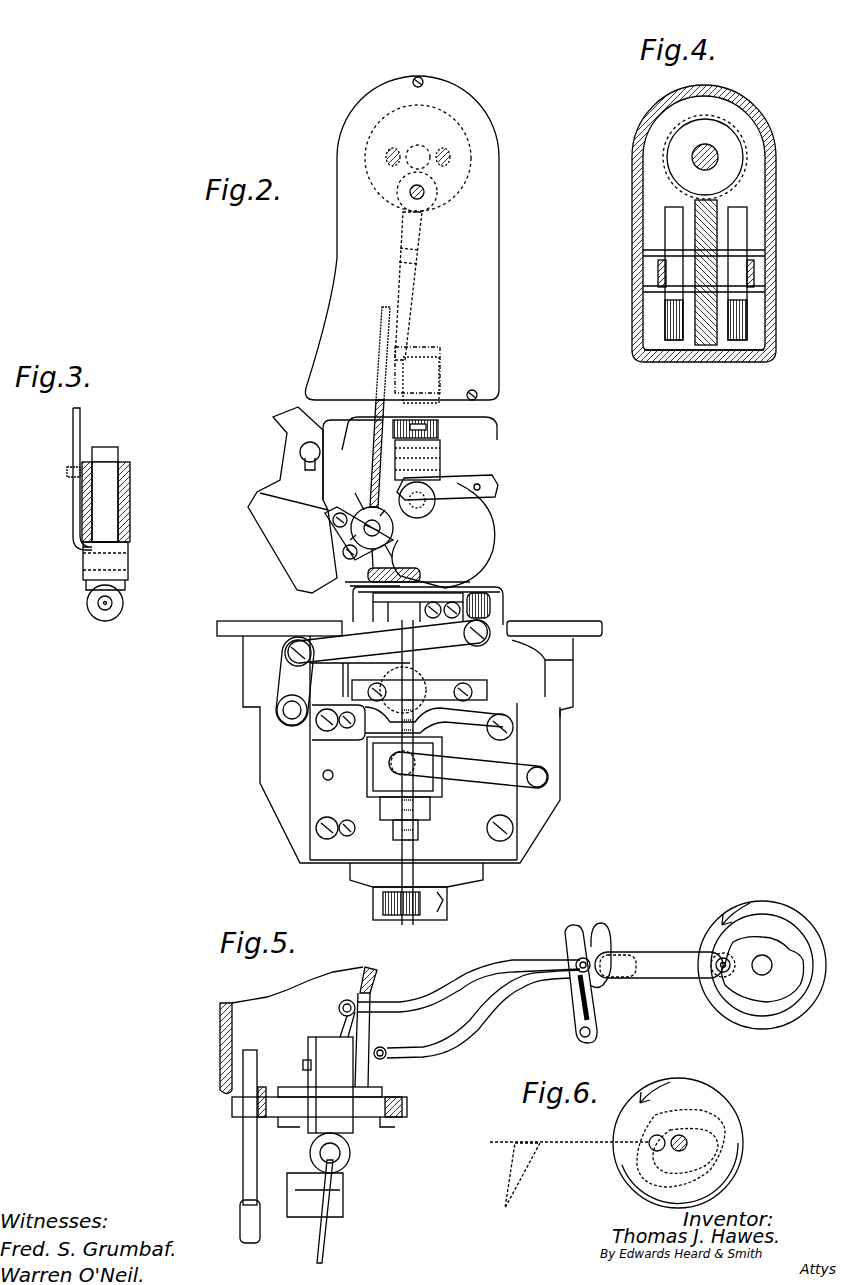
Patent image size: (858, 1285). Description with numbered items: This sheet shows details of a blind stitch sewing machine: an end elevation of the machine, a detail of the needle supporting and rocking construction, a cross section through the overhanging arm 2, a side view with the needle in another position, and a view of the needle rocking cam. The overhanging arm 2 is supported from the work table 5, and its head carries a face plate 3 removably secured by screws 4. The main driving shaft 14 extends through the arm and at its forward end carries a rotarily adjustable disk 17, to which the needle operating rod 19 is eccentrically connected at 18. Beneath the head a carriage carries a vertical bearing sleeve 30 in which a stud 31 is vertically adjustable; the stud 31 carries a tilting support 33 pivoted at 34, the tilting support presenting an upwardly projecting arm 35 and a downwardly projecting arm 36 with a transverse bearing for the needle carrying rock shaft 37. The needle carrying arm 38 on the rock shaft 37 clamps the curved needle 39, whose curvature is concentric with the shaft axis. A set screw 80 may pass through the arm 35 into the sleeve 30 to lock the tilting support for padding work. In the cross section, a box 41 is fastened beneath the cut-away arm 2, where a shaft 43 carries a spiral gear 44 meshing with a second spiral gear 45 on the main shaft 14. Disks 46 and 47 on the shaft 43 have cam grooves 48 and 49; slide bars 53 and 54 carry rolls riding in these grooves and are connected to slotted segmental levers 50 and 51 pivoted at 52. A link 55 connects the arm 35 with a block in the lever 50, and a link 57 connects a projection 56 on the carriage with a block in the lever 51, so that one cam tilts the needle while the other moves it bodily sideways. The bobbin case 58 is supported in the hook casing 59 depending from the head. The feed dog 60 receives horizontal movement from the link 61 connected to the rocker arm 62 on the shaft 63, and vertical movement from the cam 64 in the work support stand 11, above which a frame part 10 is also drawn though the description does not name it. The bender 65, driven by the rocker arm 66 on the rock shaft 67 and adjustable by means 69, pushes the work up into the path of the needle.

In FIG. 4, the overhanging arm 2 is at (748, 100).
In FIG. 2, the face plate 3 is at (480, 243).
In FIG. 2, the screws 4 is at (478, 396).
In FIG. 2, the work table 5 is at (572, 625).
In FIG. 2, the frame bracket 10 is at (503, 603).
In FIG. 2, the vertically movable work support stand 11 is at (480, 693).
In FIG. 2, the main driving shaft 14 is at (420, 156).
In FIG. 4, the main driving shaft 14 is at (718, 155).
In FIG. 2, the rotarily adjustable disk 17 is at (458, 158).
In FIG. 2, the eccentric connection 18 is at (433, 197).
In FIG. 2, the needle operating rod 19 is at (410, 289).
In FIG. 2, the vertical bearing sleeve 30 is at (438, 366).
In FIG. 3, the vertical bearing sleeve 30 is at (128, 470).
In FIG. 2, the stud 31 is at (428, 349).
In FIG. 3, the stud 31 is at (110, 447).
In FIG. 2, the tilting support 33 is at (430, 490).
In FIG. 3, the tilting support 33 is at (122, 595).
In FIG. 2, the pivot 34 is at (440, 454).
In FIG. 3, the pivot 34 is at (128, 558).
In FIG. 2, the upwardly projecting arm 35 is at (384, 333).
In FIG. 3, the upwardly projecting arm 35 is at (74, 435).
In FIG. 5, the upwardly projecting arm 35 is at (343, 1028).
In FIG. 3, the downwardly projecting arm 36 is at (98, 606).
In FIG. 3, the needle carrying rock shaft 37 is at (104, 605).
In FIG. 2, the needle carrying arm 38 is at (458, 487).
In FIG. 2, the curved needle 39 is at (490, 543).
In FIG. 4, the box 41 is at (740, 358).
In FIG. 5, the shaft 43 is at (763, 975).
In FIG. 6, the shaft 43 is at (688, 1148).
In FIG. 4, the spiral gear 44 is at (700, 350).
In FIG. 4, the second spiral gear 45 is at (725, 175).
In FIG. 4, the disk 46 is at (672, 228).
In FIG. 6, the disk 46 is at (700, 1088).
In FIG. 4, the disk 47 is at (738, 228).
In FIG. 5, the disk 47 is at (742, 893).
In FIG. 6, the cam groove 48 is at (733, 1123).
In FIG. 5, the cam groove 49 is at (782, 927).
In FIG. 5, the slotted segmental lever 50 is at (612, 932).
In FIG. 5, the slotted segmental lever 51 is at (578, 960).
In FIG. 5, the pivot 52 is at (587, 1037).
In FIG. 4, the slide bar 53 is at (662, 278).
In FIG. 4, the slide bar 54 is at (745, 258).
In FIG. 5, the slide bar 54 is at (652, 960).
In FIG. 5, the link 55 is at (452, 988).
In FIG. 5, the projection 56 is at (382, 1073).
In FIG. 5, the link 57 is at (483, 1012).
In FIG. 2, the bobbin case 58 is at (365, 507).
In FIG. 2, the hook casing 59 is at (262, 509).
In FIG. 2, the feed dog 60 is at (352, 600).
In FIG. 2, the link 61 is at (298, 640).
In FIG. 2, the rocker arm 62 is at (287, 682).
In FIG. 2, the shaft 63 is at (288, 714).
In FIG. 2, the cam 64 is at (417, 696).
In FIG. 2, the bender 65 is at (440, 602).
In FIG. 2, the rocker arm 66 is at (523, 757).
In FIG. 2, the rock shaft 67 is at (547, 776).
In FIG. 2, the adjusting means 69 is at (397, 908).
In FIG. 3, the set screw 80 is at (68, 478).